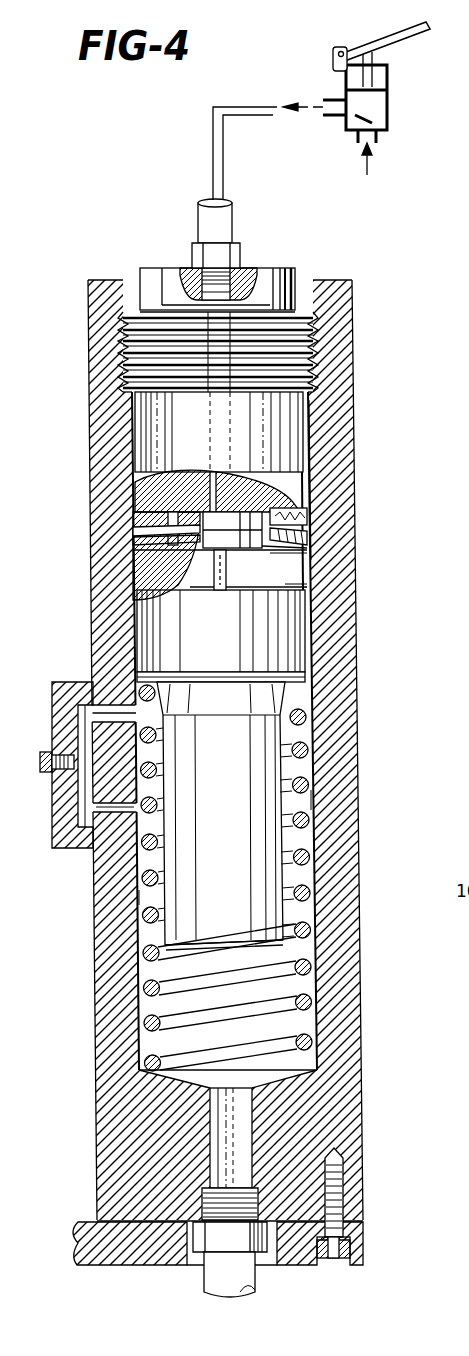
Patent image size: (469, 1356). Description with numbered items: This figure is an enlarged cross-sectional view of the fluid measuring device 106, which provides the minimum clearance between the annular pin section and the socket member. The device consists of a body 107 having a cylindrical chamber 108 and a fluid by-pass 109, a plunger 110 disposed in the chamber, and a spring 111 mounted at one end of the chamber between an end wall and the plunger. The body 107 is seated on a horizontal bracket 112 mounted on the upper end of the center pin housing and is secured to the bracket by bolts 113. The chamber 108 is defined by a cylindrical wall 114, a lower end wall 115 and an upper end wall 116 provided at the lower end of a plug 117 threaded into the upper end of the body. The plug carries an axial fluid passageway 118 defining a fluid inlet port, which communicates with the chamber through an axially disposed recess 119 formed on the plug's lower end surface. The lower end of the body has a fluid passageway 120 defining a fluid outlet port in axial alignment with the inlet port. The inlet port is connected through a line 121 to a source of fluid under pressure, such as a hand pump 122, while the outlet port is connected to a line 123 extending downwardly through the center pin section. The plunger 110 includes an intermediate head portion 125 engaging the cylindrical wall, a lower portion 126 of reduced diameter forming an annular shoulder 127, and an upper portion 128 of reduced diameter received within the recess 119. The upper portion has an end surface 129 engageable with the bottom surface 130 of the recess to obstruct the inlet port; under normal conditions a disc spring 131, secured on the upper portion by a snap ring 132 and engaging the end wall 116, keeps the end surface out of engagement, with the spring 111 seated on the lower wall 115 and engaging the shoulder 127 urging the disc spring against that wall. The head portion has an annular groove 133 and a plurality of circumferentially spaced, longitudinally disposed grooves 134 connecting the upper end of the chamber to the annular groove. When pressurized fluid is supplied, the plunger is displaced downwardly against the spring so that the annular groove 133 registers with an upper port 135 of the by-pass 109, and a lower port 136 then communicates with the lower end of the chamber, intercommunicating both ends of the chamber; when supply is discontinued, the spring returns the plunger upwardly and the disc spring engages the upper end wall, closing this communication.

The fluid measuring device 106 is at (93, 271).
The body 107 is at (92, 625).
The cylindrical chamber 108 is at (143, 897).
The fluid by-pass 109 is at (85, 803).
The plunger 110 is at (282, 637).
The spring 111 is at (307, 930).
The horizontal bracket 112 is at (117, 1260).
The bolts 113 is at (343, 1193).
The cylindrical wall 114 is at (305, 792).
The lower end wall 115 is at (283, 1070).
The upper end wall 116 is at (305, 536).
The plug 117 is at (310, 463).
The axial fluid passageway 118 is at (313, 395).
The recess 119 is at (135, 523).
The fluid passageway 120 is at (240, 1135).
The line 121 is at (222, 226).
The hand pump 122 is at (390, 105).
The line 123 is at (247, 1280).
The intermediate head portion 125 is at (268, 673).
The lower portion 126 is at (260, 772).
The annular shoulder 127 is at (308, 692).
The upper portion 128 is at (307, 550).
The end surface 129 is at (190, 507).
The bottom surface 130 is at (302, 493).
The disc spring 131 is at (150, 535).
The snap ring 132 is at (133, 547).
The annular groove 133 is at (307, 587).
The longitudinally disposed grooves 134 is at (212, 574).
The upper port 135 is at (88, 707).
The lower port 136 is at (113, 820).